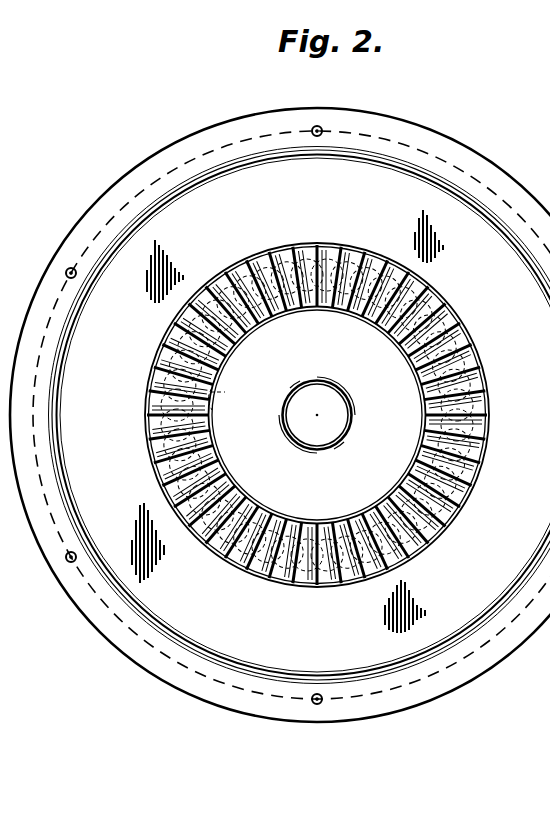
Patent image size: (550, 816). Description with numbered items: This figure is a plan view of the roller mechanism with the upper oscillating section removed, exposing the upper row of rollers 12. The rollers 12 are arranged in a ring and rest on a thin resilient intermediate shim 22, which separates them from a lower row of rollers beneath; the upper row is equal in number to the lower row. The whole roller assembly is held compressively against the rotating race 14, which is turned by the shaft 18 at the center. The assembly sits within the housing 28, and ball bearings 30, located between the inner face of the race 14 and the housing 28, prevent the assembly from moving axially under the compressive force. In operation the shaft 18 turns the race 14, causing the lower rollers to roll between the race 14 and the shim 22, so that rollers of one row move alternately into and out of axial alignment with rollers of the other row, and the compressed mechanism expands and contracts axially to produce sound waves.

The upper row of rollers 12 is at (170, 352).
The rotating race 14 is at (262, 578).
The shaft 18 is at (337, 416).
The intermediate shim 22 is at (212, 428).
The housing 28 is at (227, 133).
The ball bearings 30 is at (210, 398).